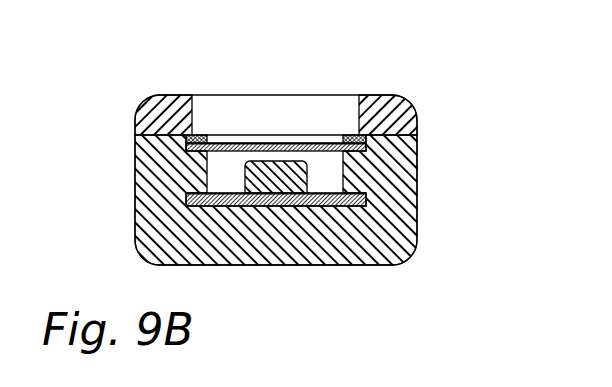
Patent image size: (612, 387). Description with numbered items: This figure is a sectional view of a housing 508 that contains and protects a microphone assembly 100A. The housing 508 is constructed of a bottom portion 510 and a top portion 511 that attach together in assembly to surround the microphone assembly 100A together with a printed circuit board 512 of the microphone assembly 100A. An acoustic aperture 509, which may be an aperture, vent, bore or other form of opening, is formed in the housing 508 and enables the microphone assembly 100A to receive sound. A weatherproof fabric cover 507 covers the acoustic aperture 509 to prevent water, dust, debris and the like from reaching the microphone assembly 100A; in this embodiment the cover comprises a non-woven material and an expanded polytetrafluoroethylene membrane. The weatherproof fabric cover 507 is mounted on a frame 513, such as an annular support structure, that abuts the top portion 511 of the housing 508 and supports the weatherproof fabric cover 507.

The housing 508 is at (417, 171).
The bottom portion 510 is at (390, 234).
The acoustic aperture 509 is at (190, 112).
The top portion 511 is at (388, 118).
The frame 513 is at (187, 141).
The weatherproof fabric cover 507 is at (280, 148).
The printed circuit board 512 is at (372, 197).
The microphone assembly 100A is at (285, 200).